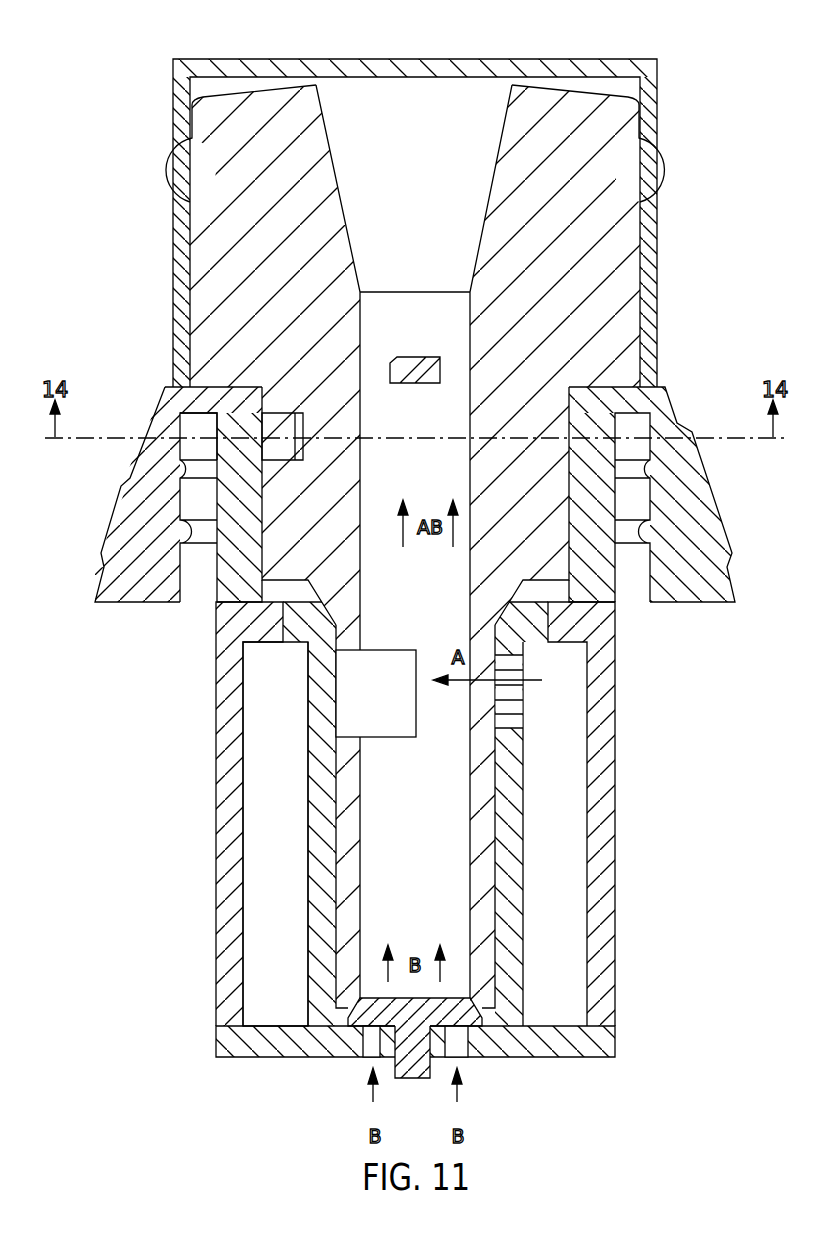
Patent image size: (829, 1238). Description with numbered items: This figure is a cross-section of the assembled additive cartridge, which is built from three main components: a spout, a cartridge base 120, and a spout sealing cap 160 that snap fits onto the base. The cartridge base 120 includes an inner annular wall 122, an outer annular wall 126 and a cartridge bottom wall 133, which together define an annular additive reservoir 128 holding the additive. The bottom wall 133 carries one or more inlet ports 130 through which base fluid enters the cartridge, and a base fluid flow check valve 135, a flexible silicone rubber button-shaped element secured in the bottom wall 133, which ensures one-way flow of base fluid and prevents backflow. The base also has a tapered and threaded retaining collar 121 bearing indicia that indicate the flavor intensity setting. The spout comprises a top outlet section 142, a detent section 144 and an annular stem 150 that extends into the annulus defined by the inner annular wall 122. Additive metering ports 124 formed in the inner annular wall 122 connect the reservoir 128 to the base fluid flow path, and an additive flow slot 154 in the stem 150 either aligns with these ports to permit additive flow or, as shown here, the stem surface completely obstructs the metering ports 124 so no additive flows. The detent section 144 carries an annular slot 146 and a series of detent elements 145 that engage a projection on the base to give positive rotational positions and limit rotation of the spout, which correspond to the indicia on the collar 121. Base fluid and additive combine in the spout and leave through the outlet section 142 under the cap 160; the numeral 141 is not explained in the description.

The funnel inlet passage 141 is at (410, 126).
The top outlet section 142 is at (615, 123).
The spout sealing cap 160 is at (657, 258).
The detent elements 145 is at (276, 452).
The annular slot 146 is at (298, 425).
The cartridge base 120 is at (645, 401).
The retaining collar 121 is at (712, 500).
The detent section 144 is at (548, 537).
The additive flow slot 154 is at (400, 729).
The additive metering ports 124 is at (517, 694).
The annular additive reservoir 128 is at (289, 823).
The annular stem 150 is at (487, 831).
The outer annular wall 126 is at (613, 863).
The inner annular wall 122 is at (518, 906).
The inlet ports 130 is at (368, 1058).
The base fluid flow check valve 135 is at (413, 1077).
The cartridge bottom wall 133 is at (558, 1050).